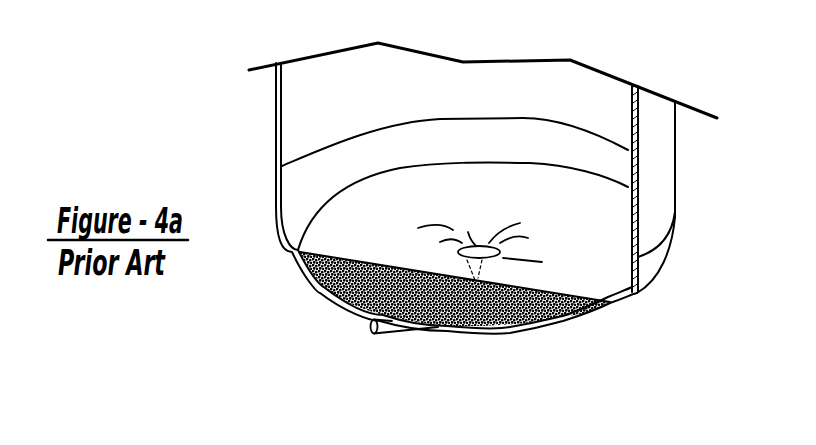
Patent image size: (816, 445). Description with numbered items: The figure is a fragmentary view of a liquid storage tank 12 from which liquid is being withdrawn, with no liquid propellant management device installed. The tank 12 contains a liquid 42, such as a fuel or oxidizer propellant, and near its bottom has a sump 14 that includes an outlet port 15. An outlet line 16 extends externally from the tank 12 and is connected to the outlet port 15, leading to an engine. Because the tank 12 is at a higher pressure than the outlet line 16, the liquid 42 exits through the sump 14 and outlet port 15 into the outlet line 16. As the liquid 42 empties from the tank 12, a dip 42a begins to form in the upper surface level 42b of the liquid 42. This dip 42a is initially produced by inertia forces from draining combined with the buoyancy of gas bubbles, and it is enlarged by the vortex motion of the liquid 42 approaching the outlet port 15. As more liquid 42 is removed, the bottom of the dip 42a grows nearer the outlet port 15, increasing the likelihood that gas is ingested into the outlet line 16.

The tank 12 is at (657, 173).
The sump 14 is at (505, 292).
The outlet port 15 is at (480, 300).
The outlet line 16 is at (400, 332).
The liquid 42 is at (383, 283).
The dip 42a is at (482, 265).
The upper surface level 42b is at (393, 202).